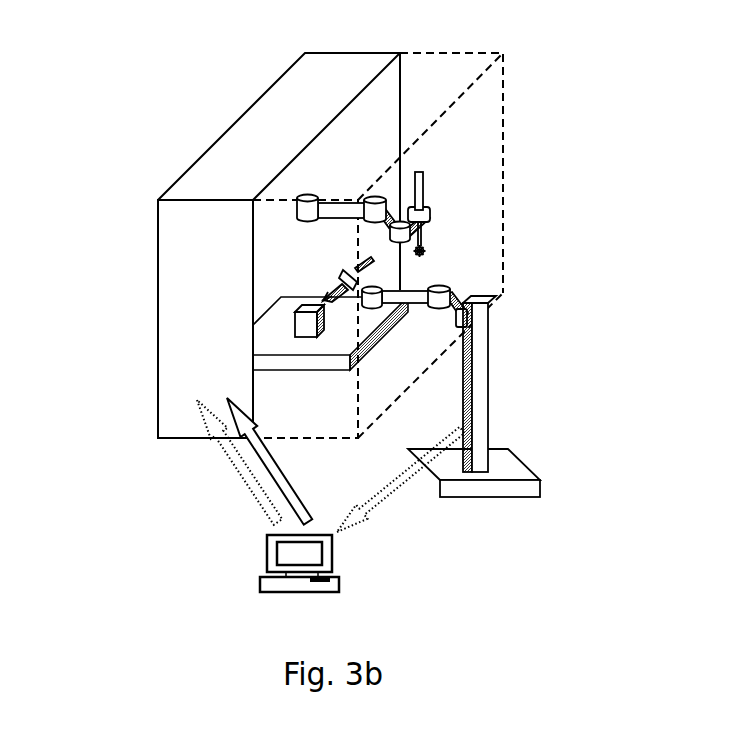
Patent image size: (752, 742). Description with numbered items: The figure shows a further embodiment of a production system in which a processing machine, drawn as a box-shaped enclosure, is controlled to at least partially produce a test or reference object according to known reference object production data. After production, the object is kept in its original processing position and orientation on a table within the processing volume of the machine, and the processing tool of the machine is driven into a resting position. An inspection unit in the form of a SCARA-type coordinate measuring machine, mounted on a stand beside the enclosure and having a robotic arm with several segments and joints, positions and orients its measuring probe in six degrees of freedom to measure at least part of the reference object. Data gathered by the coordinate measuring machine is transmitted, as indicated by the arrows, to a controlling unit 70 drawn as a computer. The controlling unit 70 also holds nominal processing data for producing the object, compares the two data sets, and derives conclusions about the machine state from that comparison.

The controlling unit 70 is at (337, 577).